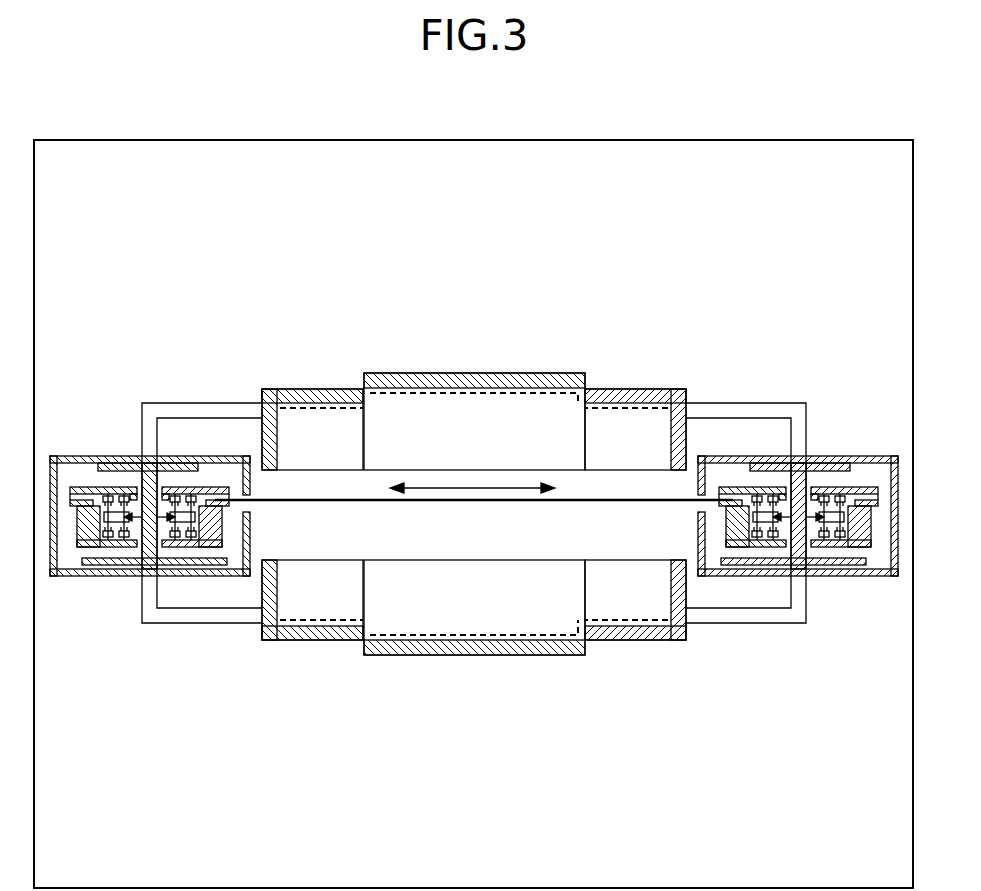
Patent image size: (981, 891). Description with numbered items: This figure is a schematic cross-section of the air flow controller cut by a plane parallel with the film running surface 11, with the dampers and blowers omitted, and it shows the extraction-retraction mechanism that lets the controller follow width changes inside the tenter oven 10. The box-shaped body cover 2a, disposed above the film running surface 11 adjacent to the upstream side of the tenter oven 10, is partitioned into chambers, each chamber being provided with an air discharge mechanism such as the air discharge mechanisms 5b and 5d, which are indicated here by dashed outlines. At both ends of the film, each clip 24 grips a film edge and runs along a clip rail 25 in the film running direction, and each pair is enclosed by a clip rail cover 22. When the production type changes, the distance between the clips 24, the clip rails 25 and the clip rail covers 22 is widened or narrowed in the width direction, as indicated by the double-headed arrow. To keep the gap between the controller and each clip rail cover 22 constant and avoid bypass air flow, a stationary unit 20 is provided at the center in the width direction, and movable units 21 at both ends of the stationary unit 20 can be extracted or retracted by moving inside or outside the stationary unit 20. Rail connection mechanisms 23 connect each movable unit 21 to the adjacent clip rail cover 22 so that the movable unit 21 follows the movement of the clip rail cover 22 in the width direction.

The tenter oven 10 is at (654, 140).
The film running surface 11 is at (385, 497).
The stationary unit 20 is at (512, 404).
The box-shaped body cover 2a is at (388, 373).
The air discharge mechanism 5b is at (560, 393).
The air discharge mechanism 5d is at (563, 655).
The movable unit 21 is at (310, 389).
The clip rail cover 22 is at (112, 465).
The rail connection mechanism 23 is at (223, 403).
The clip 24 is at (76, 556).
The clip rail 25 is at (127, 542).